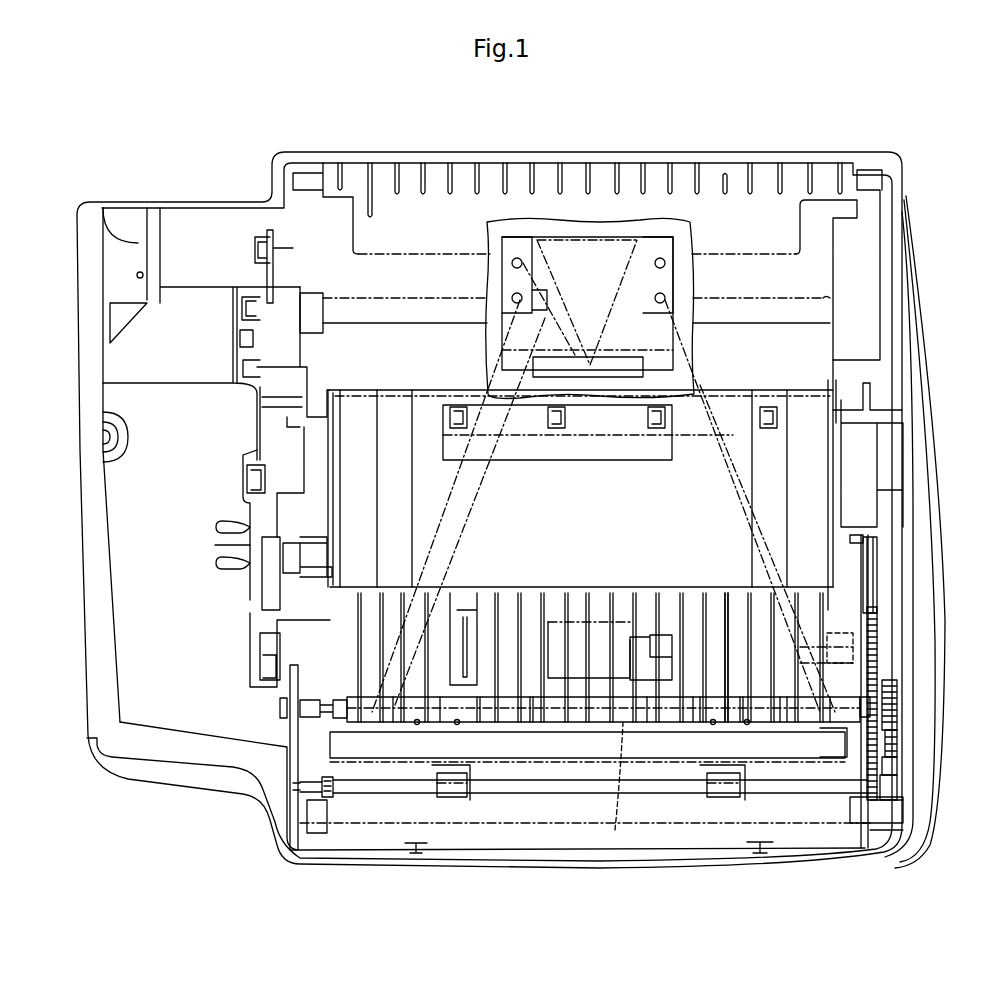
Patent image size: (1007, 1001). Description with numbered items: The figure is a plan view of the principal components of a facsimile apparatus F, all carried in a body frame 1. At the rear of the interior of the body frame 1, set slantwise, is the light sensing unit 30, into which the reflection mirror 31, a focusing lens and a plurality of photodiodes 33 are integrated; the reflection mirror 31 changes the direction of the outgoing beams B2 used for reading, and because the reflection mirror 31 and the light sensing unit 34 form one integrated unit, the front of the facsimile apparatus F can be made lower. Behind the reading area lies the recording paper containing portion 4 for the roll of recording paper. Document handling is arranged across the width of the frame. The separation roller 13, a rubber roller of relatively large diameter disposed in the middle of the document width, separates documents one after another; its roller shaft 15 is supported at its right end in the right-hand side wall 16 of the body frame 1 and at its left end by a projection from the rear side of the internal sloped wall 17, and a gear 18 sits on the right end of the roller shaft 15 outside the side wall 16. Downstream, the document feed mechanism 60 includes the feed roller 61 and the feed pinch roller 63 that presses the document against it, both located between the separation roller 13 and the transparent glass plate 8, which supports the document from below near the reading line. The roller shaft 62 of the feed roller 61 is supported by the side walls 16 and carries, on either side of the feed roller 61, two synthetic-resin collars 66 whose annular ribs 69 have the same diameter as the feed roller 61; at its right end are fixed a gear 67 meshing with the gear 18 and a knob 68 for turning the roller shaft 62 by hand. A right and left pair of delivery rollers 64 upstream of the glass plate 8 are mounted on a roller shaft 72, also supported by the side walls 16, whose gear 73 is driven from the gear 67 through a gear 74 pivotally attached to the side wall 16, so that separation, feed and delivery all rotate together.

The facsimile apparatus F is at (852, 142).
The body frame 1 is at (563, 870).
The light sensing unit 30 is at (679, 265).
The reflection mirror 31 is at (587, 303).
The photodiodes 33 is at (618, 358).
The light sensing unit 34 is at (695, 296).
The outgoing beams B2 is at (445, 480).
The recording paper containing portion 4 is at (750, 518).
The annular ribs 69 is at (700, 700).
The feed roller 61 is at (545, 660).
The separation roller 13 is at (600, 650).
The roller shaft 15 is at (656, 636).
The internal sloped wall 17 is at (720, 590).
The side wall 16 is at (298, 668).
The gear 18 is at (882, 640).
The knob 68 is at (897, 703).
The gear 67 is at (885, 747).
The gear 74 is at (883, 763).
The gear 73 is at (883, 778).
The roller shaft 62 is at (840, 703).
The collars 66 is at (417, 722).
The document feed mechanism 60 is at (577, 723).
The feed pinch roller 63 is at (615, 790).
The delivery rollers 64 is at (433, 797).
The roller shaft 72 is at (808, 787).
The transparent glass plate 8 is at (828, 740).